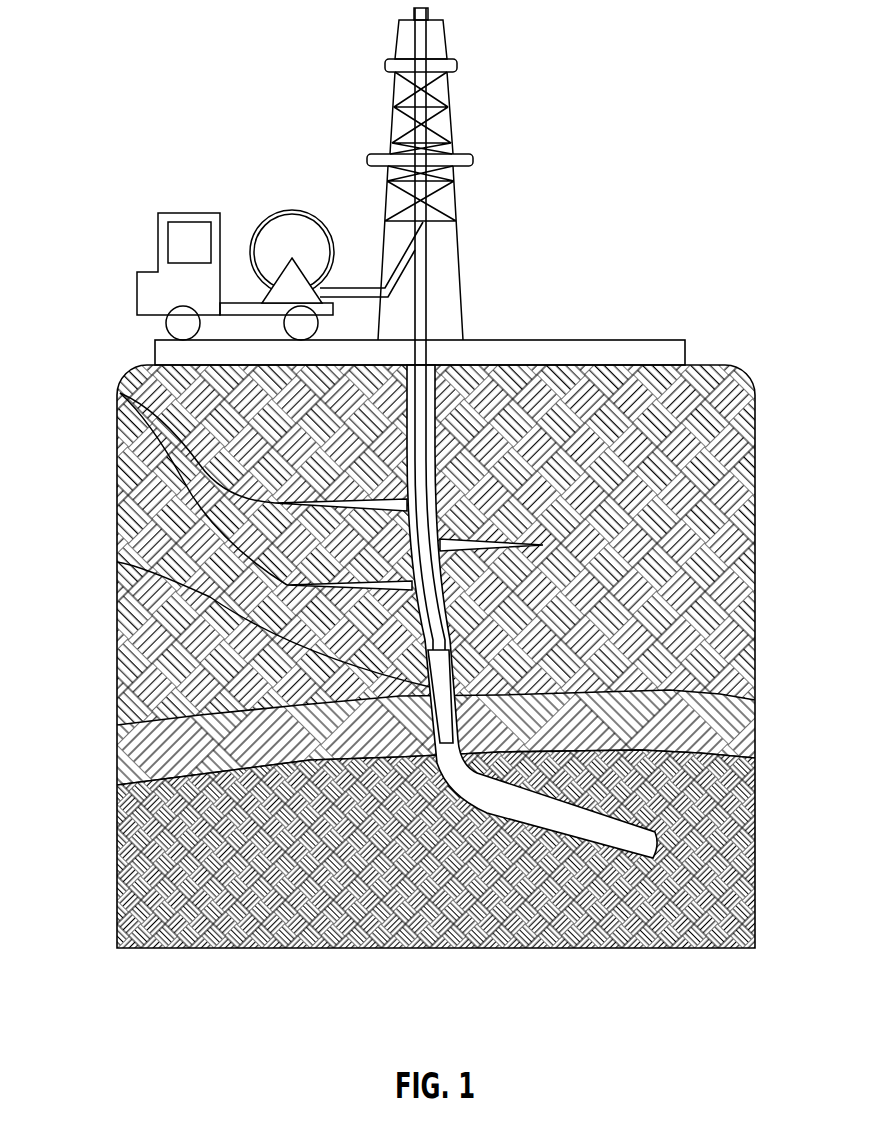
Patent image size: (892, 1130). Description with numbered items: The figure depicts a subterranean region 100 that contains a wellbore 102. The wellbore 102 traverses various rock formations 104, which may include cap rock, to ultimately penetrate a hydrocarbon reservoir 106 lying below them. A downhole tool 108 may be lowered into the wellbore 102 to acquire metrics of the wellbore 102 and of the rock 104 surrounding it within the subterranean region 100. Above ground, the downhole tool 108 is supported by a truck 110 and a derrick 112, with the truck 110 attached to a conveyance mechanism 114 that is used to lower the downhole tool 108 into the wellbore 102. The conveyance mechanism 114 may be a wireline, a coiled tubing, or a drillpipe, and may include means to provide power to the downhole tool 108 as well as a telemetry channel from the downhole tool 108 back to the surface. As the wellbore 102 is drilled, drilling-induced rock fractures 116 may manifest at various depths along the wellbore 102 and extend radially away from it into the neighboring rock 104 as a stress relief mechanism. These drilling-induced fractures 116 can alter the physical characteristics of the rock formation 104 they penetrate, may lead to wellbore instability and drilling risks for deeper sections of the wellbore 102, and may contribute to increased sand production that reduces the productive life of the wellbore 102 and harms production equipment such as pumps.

The subterranean region 100 is at (760, 364).
The wellbore 102 is at (483, 795).
The rock formation 104 is at (130, 757).
The hydrocarbon reservoir 106 is at (672, 900).
The downhole tool 108 is at (117, 562).
The truck 110 is at (157, 243).
The derrick 112 is at (445, 42).
The conveyance mechanism 114 is at (427, 257).
The drilling-induced rock fractures 116 is at (120, 393).